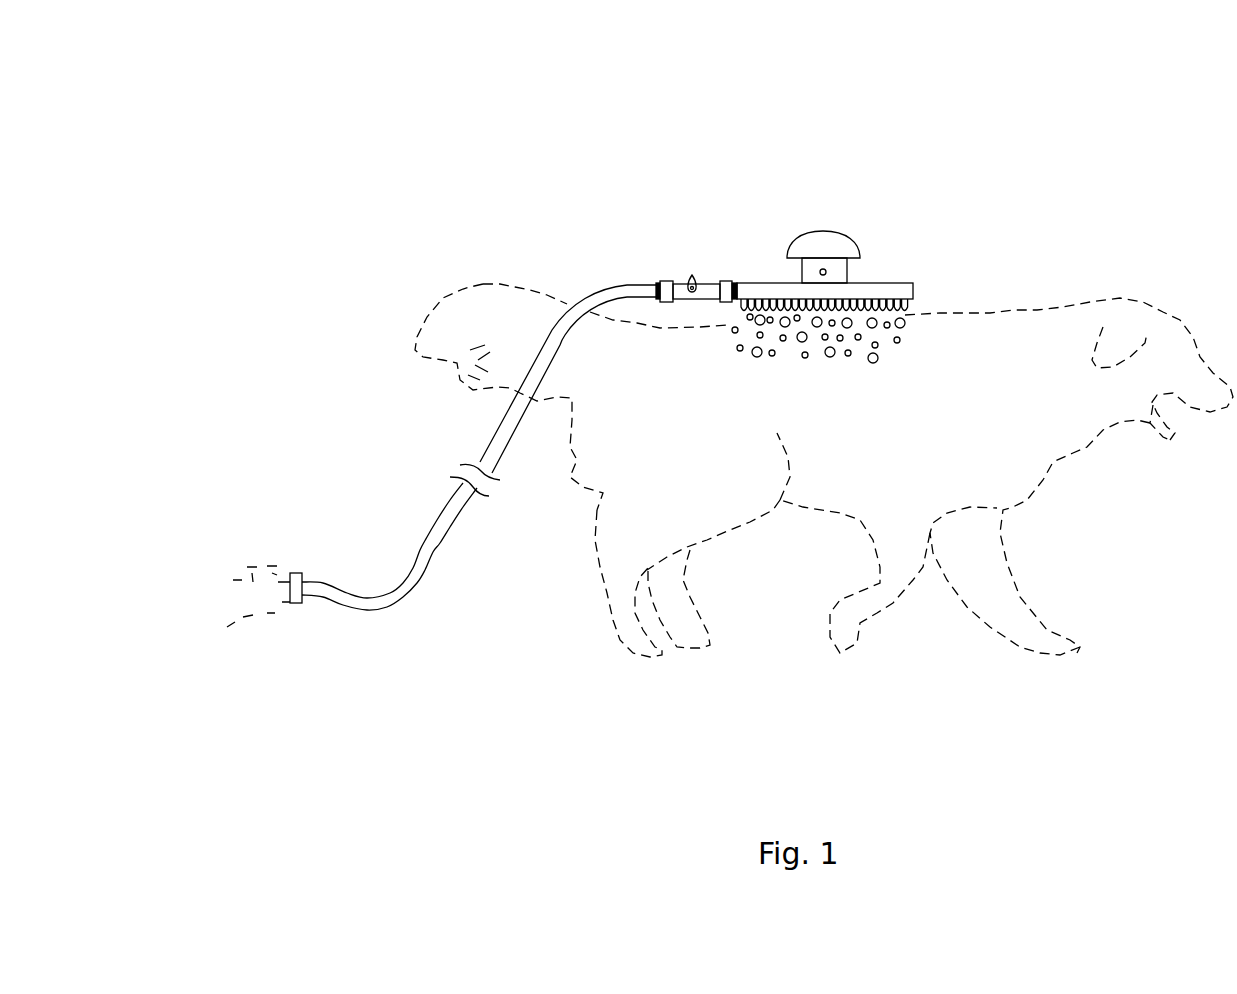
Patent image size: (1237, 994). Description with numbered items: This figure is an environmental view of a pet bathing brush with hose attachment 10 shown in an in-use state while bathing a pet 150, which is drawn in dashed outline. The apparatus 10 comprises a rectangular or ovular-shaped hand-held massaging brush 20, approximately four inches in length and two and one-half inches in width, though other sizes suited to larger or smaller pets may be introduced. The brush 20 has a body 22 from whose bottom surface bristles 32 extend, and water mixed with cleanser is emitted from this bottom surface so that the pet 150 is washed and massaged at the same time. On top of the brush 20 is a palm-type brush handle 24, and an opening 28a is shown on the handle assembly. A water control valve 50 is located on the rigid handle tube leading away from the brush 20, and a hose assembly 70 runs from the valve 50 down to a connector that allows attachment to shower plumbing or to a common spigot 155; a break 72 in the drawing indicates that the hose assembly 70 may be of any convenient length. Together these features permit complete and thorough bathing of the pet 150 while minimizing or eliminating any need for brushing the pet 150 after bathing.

The pet bathing brush with hose attachment 10 is at (385, 175).
The hand-held massaging brush 20 is at (827, 220).
The brush head body 22 is at (907, 290).
The palm-type brush handle 24 is at (802, 244).
The aperture 28a is at (827, 271).
The bristles 32 is at (740, 313).
The water control valve 50 is at (674, 263).
The hose assembly 70 is at (402, 606).
The hose break 72 is at (444, 503).
The pet 150 is at (1163, 312).
The spigot 155 is at (270, 600).